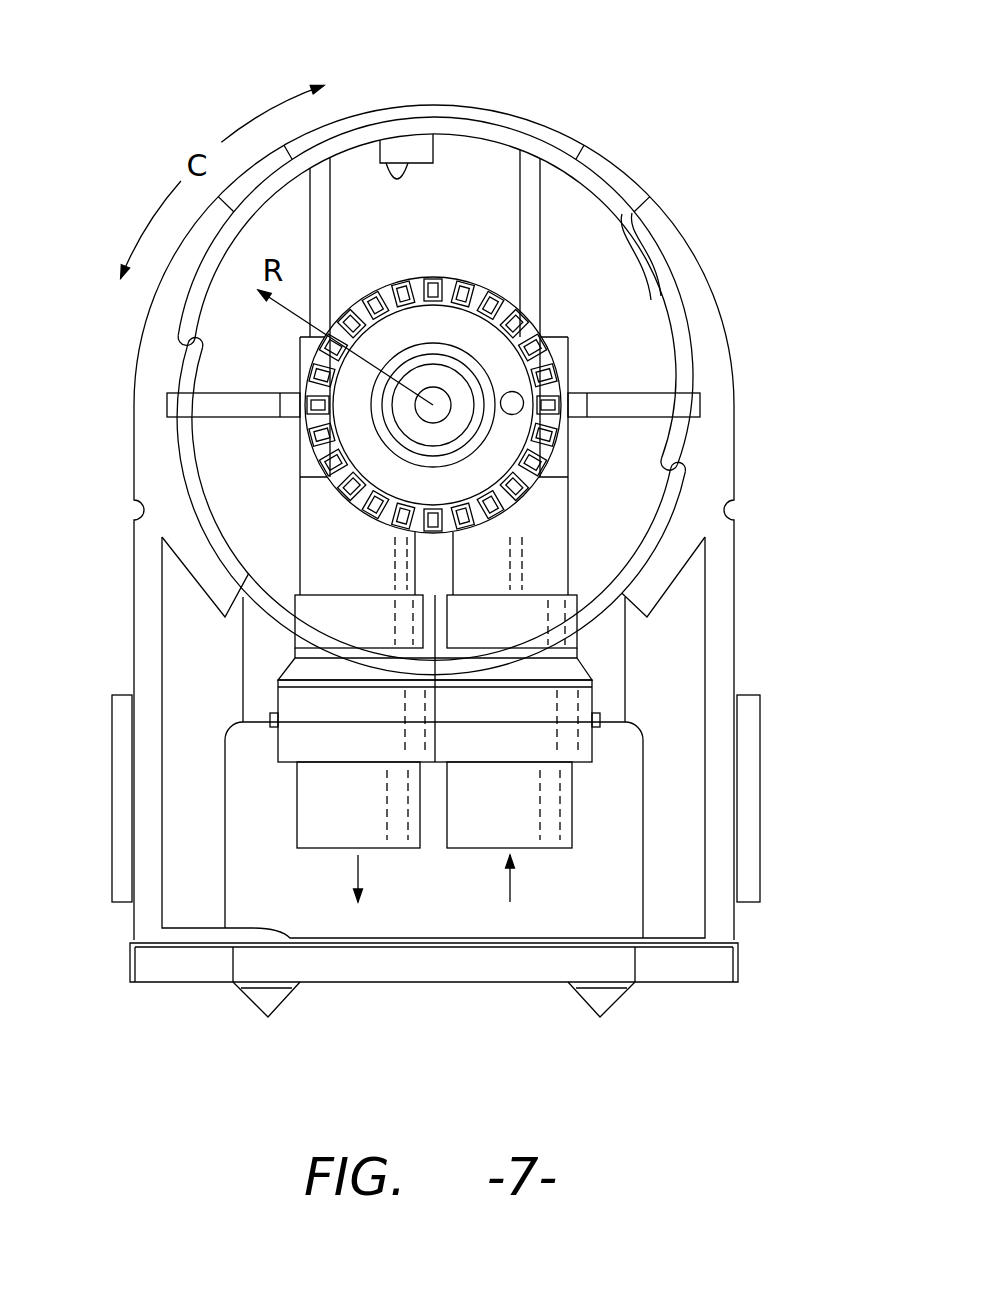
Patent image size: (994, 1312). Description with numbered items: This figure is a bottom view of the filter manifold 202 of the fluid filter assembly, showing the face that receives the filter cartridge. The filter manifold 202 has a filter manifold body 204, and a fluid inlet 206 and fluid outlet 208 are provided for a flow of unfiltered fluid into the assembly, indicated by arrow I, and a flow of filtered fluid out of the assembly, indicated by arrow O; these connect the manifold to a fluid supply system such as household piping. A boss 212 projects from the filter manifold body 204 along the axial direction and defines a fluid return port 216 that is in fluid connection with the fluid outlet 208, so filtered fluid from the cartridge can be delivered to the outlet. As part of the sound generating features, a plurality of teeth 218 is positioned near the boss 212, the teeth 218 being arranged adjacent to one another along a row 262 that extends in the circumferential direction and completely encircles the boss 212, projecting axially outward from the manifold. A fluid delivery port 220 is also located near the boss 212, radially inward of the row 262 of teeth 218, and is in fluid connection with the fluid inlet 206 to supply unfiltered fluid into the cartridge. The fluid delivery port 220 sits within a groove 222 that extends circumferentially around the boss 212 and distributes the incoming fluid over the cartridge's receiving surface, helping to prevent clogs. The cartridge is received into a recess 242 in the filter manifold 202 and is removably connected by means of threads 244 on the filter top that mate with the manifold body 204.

The filter manifold 202 is at (667, 112).
The filter manifold body 204 is at (712, 343).
The fluid inlet 206 is at (553, 822).
The fluid outlet 208 is at (310, 820).
The boss 212 is at (423, 360).
The fluid return port 216 is at (447, 392).
The teeth 218 is at (390, 287).
The fluid delivery port 220 is at (520, 418).
The groove 222 is at (362, 453).
The recess 242 is at (237, 349).
The threads 244 is at (393, 187).
The row 262 is at (520, 518).